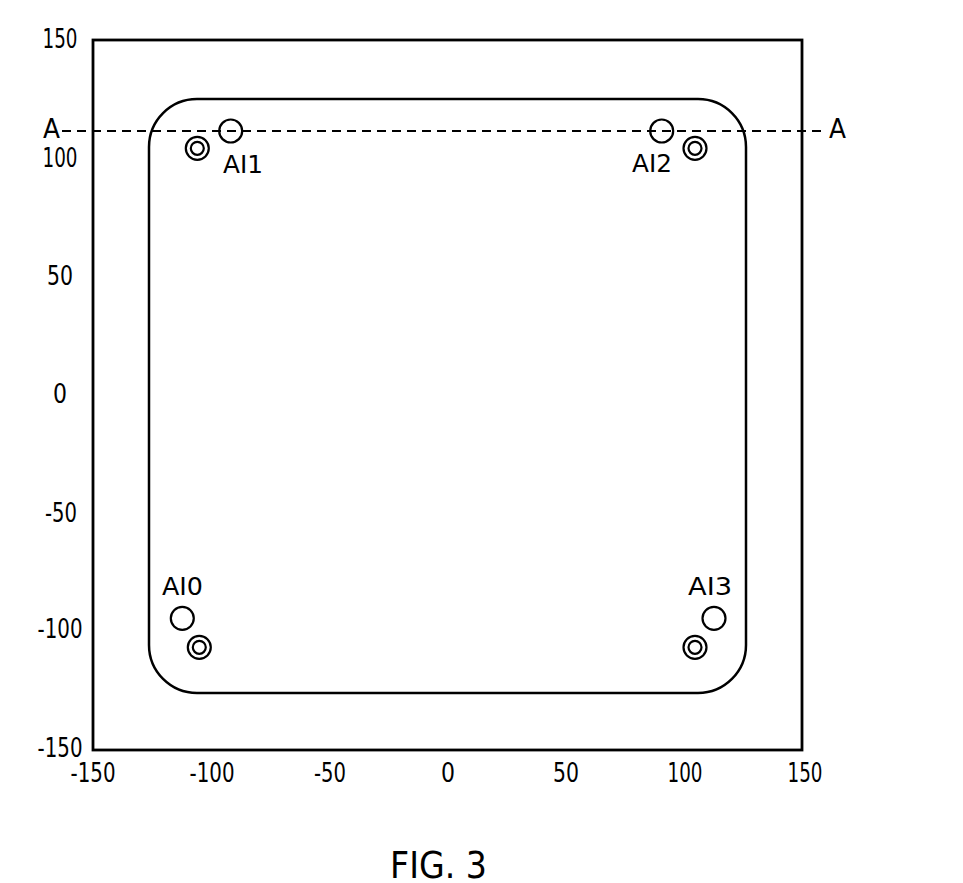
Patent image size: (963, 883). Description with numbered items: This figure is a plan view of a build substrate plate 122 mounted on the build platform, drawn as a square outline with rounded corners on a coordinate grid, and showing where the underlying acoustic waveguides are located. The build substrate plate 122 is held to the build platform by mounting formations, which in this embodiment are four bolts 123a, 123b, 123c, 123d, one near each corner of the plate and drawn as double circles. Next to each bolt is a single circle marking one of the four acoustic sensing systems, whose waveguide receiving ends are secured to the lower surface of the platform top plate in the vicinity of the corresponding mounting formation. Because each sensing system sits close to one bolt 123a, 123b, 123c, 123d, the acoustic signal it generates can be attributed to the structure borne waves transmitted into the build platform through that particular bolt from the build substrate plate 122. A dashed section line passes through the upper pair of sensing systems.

The build substrate plate 122 is at (474, 396).
The bolt 123a is at (198, 160).
The bolt 123b is at (692, 160).
The bolt 123c is at (211, 648).
The bolt 123d is at (684, 646).